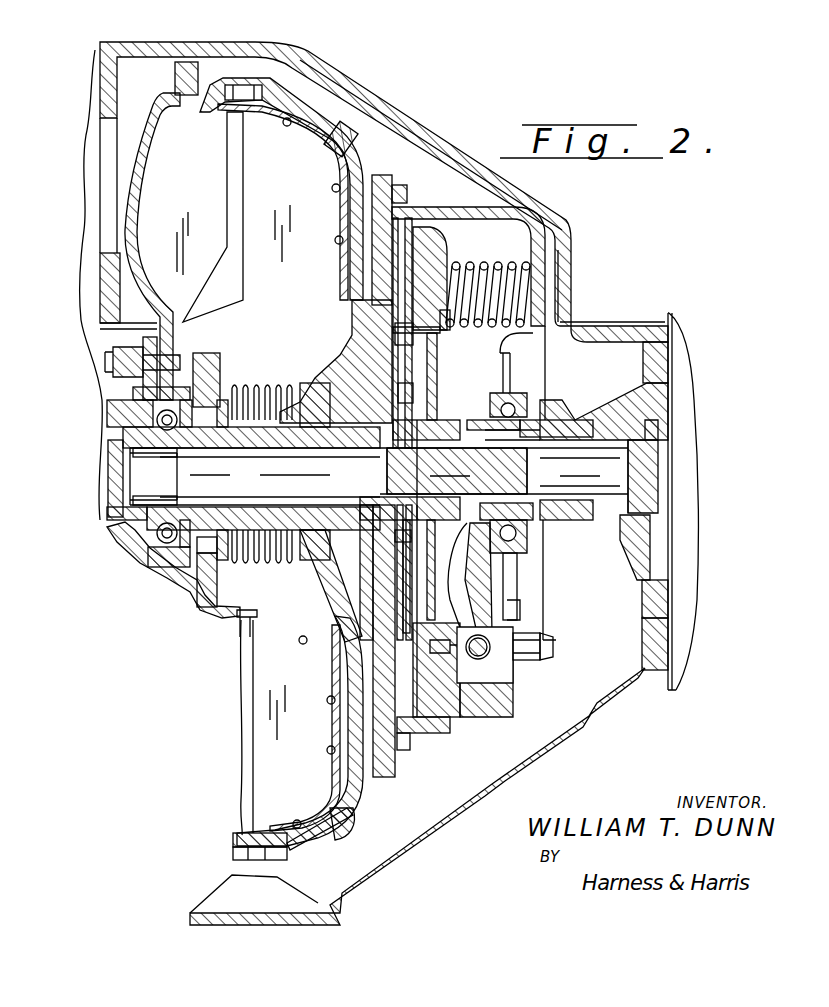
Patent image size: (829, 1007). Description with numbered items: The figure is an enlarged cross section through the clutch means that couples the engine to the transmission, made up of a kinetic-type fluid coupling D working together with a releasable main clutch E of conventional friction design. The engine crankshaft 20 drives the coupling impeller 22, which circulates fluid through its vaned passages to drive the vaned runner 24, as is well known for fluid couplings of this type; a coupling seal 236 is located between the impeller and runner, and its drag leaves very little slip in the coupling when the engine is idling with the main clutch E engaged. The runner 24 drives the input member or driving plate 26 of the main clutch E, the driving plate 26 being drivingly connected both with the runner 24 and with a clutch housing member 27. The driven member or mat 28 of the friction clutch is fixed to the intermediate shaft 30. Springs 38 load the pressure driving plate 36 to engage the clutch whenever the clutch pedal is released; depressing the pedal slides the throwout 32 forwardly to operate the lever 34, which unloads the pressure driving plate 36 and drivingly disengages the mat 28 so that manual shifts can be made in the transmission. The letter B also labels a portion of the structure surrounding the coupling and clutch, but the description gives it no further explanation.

The fluid coupling D is at (300, 78).
The housing wall B is at (388, 108).
The main clutch E is at (450, 183).
The engine crankshaft 20 is at (108, 421).
The coupling impeller 22 is at (197, 184).
The vaned runner 24 is at (302, 193).
The driving plate 26 is at (378, 175).
The clutch housing member 27 is at (455, 221).
The driven member 28 is at (408, 228).
The intermediate shaft 30 is at (616, 470).
The throwout 32 is at (570, 402).
The lever 34 is at (480, 584).
The pressure driving plate 36 is at (445, 249).
The springs 38 is at (482, 268).
The coupling seal 236 is at (250, 555).